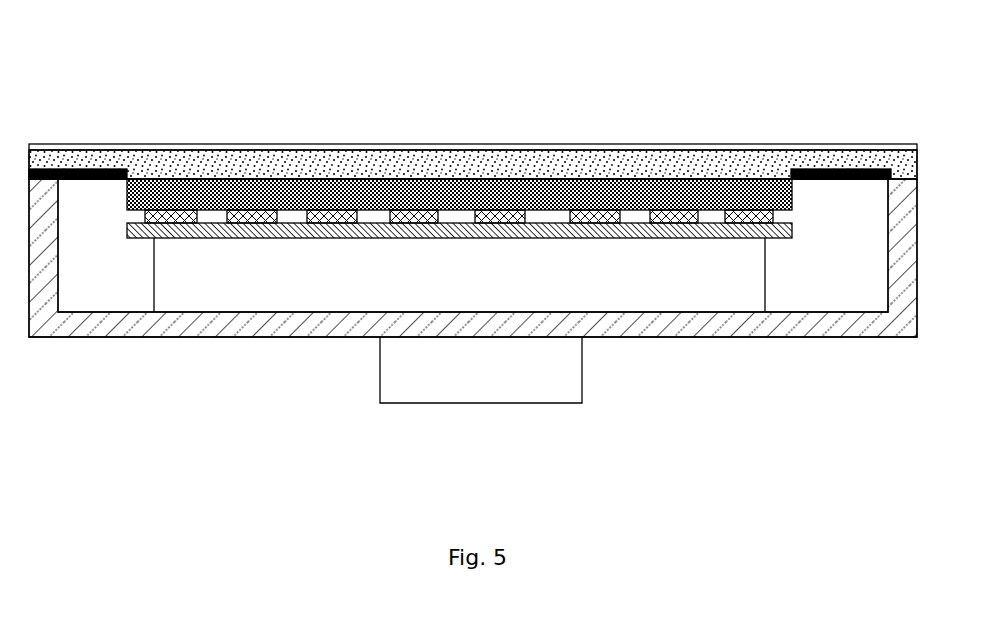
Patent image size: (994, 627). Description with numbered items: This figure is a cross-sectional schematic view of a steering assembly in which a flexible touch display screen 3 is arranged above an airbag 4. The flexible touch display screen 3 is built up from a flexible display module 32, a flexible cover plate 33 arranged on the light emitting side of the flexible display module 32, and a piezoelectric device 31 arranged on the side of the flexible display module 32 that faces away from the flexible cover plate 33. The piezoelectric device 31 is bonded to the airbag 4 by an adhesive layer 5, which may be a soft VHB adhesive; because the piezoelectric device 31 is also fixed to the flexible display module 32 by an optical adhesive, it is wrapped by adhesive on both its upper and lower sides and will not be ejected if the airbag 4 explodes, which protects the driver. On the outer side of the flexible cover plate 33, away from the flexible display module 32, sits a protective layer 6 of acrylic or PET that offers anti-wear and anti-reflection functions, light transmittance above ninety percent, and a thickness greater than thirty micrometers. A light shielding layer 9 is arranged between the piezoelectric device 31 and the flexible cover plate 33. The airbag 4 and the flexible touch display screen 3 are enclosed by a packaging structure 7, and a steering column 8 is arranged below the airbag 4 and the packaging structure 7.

The flexible touch display screen 3 is at (459, 119).
The piezoelectric device 31 is at (673, 217).
The flexible display module 32 is at (580, 195).
The flexible cover plate 33 is at (512, 118).
The airbag 4 is at (252, 273).
The adhesive layer 5 is at (792, 228).
The protective layer 6 is at (390, 151).
The packaging structure 7 is at (820, 325).
The steering column 8 is at (478, 367).
The light shielding layer 9 is at (82, 173).